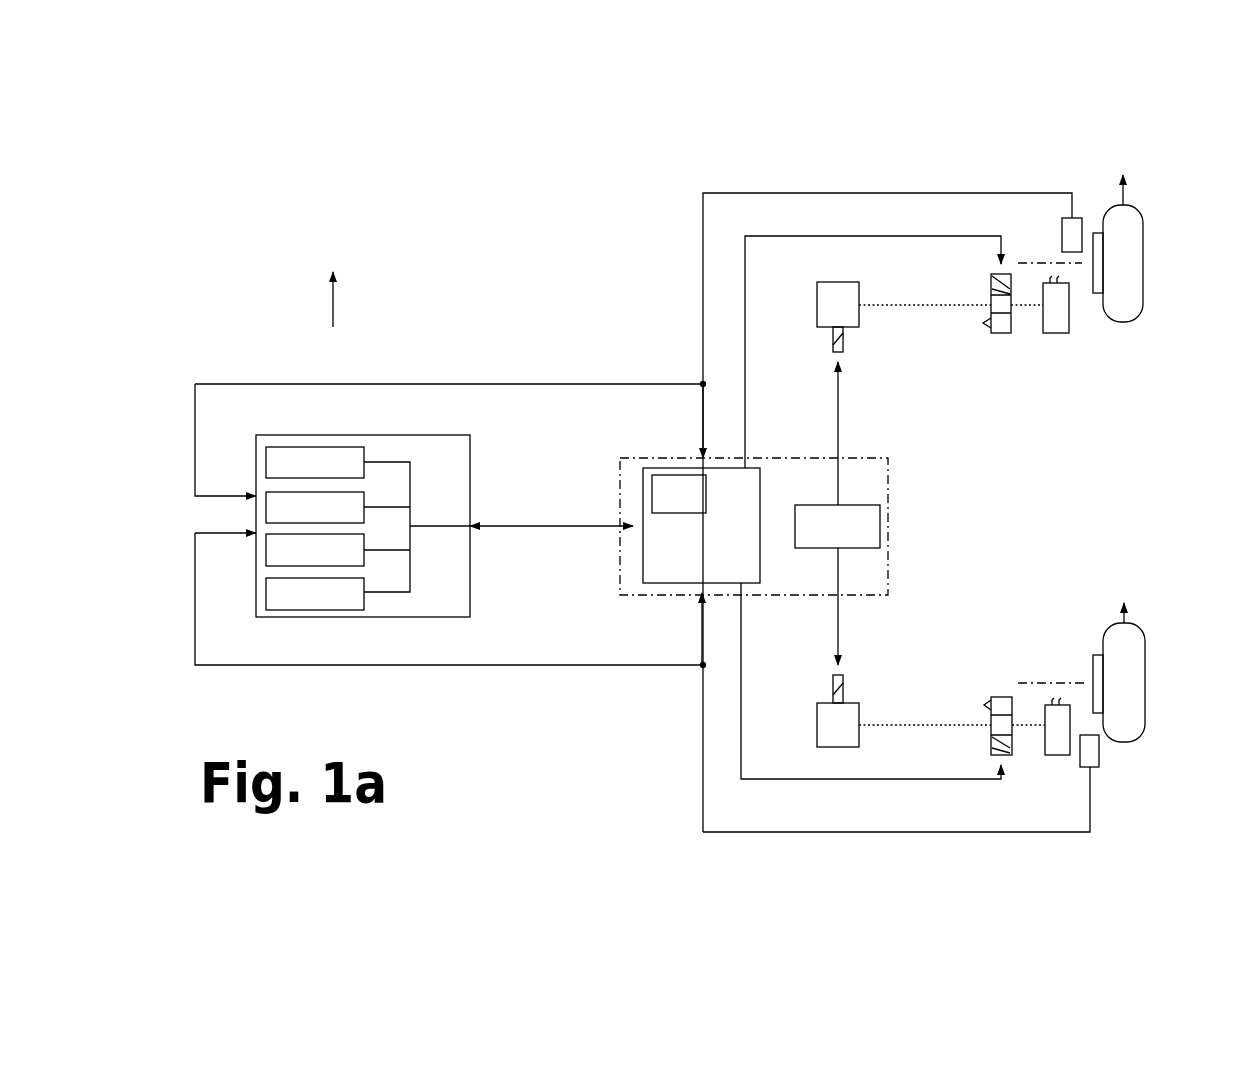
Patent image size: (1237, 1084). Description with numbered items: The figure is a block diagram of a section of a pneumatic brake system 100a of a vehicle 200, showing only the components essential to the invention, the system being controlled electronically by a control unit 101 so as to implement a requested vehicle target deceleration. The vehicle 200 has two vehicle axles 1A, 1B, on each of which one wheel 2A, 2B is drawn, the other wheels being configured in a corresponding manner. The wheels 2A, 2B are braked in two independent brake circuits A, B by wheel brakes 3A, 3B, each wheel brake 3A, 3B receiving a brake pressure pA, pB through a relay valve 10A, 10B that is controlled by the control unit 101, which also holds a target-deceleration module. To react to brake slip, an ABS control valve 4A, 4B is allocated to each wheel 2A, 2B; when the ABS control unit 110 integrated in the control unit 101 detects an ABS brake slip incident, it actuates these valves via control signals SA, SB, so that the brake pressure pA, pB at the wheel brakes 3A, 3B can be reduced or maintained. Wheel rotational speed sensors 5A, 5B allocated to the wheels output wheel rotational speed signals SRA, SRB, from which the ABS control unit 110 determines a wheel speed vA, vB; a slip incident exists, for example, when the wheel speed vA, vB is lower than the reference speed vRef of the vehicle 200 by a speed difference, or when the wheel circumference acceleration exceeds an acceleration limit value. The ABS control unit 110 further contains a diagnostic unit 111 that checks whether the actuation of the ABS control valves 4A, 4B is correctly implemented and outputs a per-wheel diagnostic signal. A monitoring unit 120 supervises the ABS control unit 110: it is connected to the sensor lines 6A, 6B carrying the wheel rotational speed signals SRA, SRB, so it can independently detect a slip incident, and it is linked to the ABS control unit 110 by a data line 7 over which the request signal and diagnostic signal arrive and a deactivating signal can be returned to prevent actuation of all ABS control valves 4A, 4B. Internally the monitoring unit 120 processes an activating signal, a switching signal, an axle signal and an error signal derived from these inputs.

The vehicle 200 is at (265, 348).
The pneumatic brake system 100a is at (533, 306).
The data line 7 is at (575, 590).
The monitoring unit 120 is at (460, 604).
The ABS control unit 110 is at (755, 507).
The diagnostic unit 111 is at (700, 507).
The control unit 101 is at (888, 527).
The sensor line 6A is at (890, 193).
The sensor line 6B is at (903, 832).
The relay valve 10A is at (838, 280).
The relay valve 10B is at (840, 747).
The ABS control valve 4A is at (1003, 333).
The ABS control valve 4B is at (992, 683).
The wheel brake 3A is at (1057, 333).
The wheel brake 3B is at (1057, 755).
The vehicle axle 1A is at (1040, 262).
The vehicle axle 1B is at (1040, 682).
The wheel 2A is at (1123, 322).
The wheel 2B is at (1124, 742).
The wheel rotational speed sensor 5A is at (1085, 233).
The wheel rotational speed sensor 5B is at (1099, 750).
The wheel speed vA is at (1125, 182).
The wheel speed vB is at (1127, 605).
The brake circuit A is at (1117, 420).
The brake circuit B is at (1075, 600).
The reference speed vRef is at (333, 295).
The wheel rotational speed signal SRA is at (703, 262).
The wheel rotational speed signal SRB is at (703, 770).
The control signal SA is at (743, 328).
The control signal SB is at (742, 710).
The brake pressure pA is at (920, 305).
The brake pressure pB is at (920, 725).